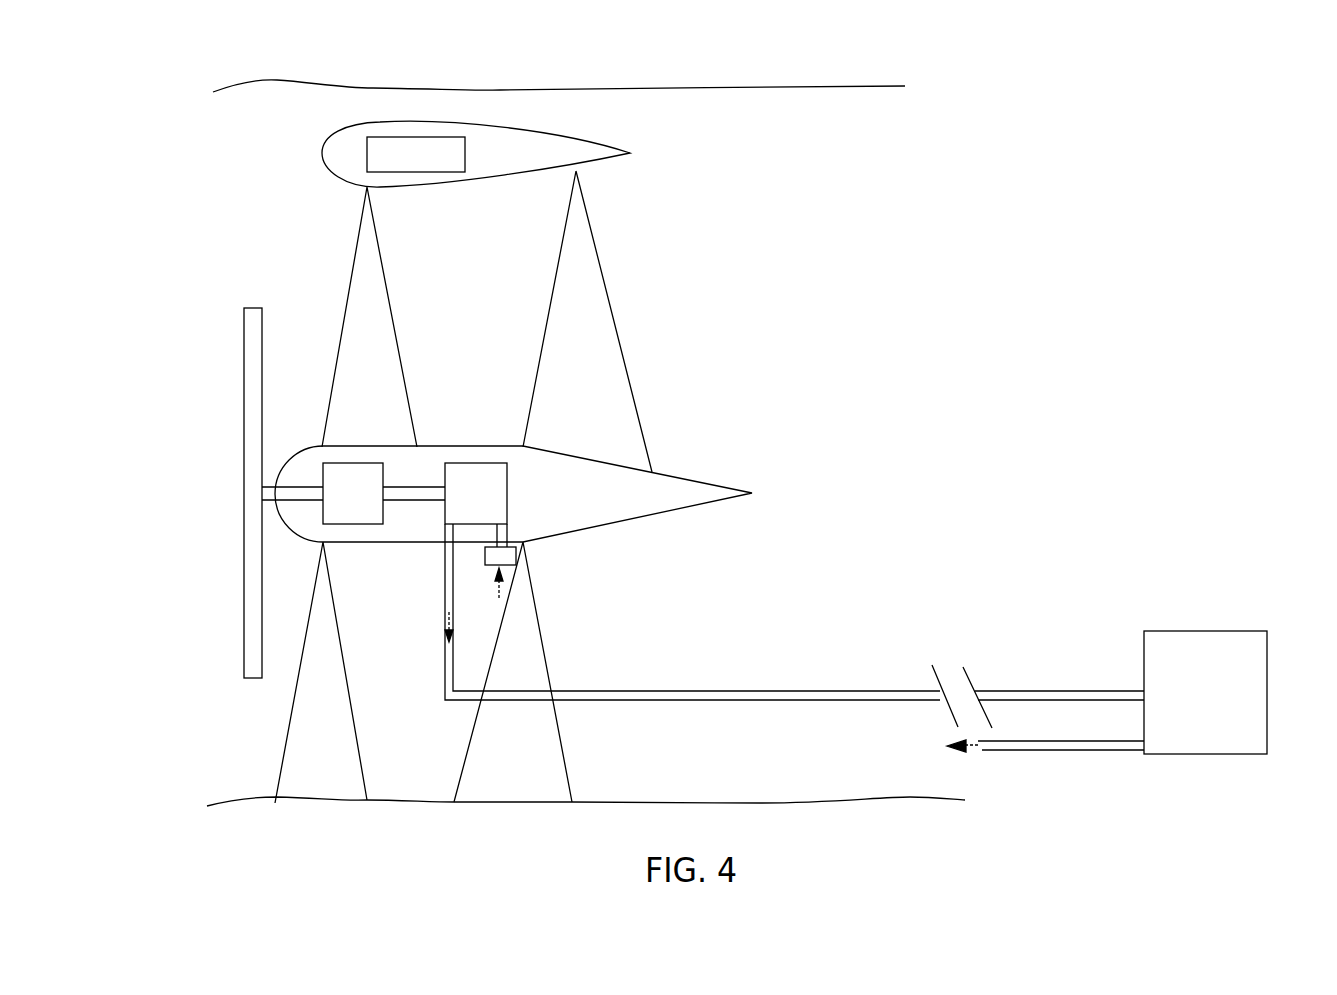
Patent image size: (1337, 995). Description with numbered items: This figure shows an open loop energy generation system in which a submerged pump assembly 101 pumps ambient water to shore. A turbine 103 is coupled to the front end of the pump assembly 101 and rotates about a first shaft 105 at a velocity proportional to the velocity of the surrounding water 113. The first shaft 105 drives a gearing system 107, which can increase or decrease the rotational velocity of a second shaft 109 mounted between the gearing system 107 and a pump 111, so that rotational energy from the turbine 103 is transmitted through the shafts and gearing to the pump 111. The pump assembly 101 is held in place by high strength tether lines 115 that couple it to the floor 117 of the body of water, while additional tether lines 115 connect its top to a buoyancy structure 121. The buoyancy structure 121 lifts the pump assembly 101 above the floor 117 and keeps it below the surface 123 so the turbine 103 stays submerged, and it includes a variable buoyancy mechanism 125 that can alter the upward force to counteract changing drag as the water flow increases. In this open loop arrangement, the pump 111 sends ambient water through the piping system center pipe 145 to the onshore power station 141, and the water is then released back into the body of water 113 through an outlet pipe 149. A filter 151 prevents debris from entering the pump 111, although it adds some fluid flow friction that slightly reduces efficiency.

The pump assembly 101 is at (680, 357).
The turbine 103 is at (222, 395).
The first shaft 105 is at (263, 487).
The gearing system 107 is at (368, 514).
The second shaft 109 is at (401, 493).
The pump 111 is at (495, 499).
The water 113 is at (298, 102).
The tether lines 115 is at (388, 292).
The floor 117 is at (773, 810).
The buoyancy structure 121 is at (537, 128).
The surface 123 is at (477, 87).
The variable buoyancy mechanism 125 is at (452, 165).
The onshore power station 141 is at (1177, 632).
The piping system center pipe 145 is at (776, 692).
The outlet pipe 149 is at (1080, 743).
The filter 151 is at (492, 558).